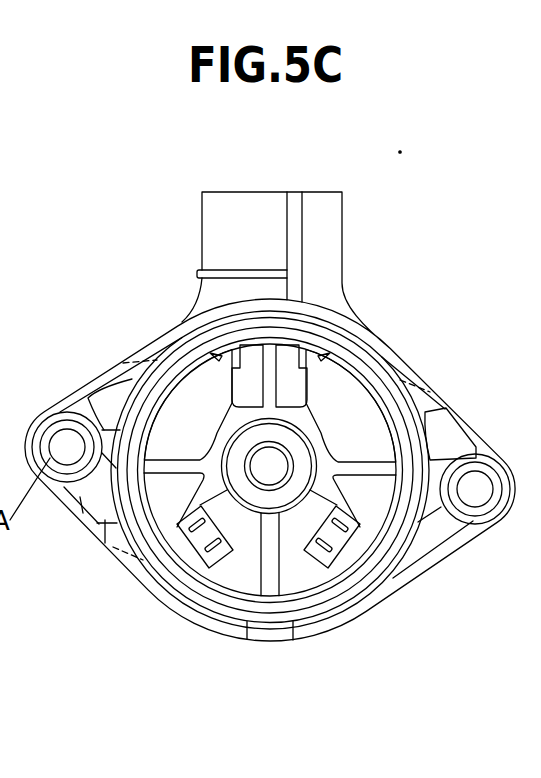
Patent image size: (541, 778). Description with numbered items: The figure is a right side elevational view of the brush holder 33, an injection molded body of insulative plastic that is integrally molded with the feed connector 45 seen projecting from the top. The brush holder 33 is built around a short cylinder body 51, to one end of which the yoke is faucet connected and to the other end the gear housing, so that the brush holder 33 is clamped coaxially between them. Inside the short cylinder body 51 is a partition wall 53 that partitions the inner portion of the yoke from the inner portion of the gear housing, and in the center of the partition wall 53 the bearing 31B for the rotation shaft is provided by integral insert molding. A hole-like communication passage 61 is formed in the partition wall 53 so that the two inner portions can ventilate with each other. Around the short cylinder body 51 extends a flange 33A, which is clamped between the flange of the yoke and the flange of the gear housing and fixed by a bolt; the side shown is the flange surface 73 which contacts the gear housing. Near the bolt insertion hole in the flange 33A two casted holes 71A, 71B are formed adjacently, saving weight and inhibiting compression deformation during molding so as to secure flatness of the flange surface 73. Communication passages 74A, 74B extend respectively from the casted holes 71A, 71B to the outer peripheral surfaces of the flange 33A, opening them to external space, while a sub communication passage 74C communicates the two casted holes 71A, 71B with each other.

The brush holder 33 is at (377, 303).
The feed connector 45 is at (212, 217).
The partition wall 53 is at (367, 420).
The communication passage 61 is at (215, 355).
The flange surface 73 is at (65, 415).
The casted hole 71A is at (97, 387).
The communication passage 74A is at (103, 405).
The flange 33A is at (52, 480).
The communication passage 74B is at (84, 523).
The casted hole 71B is at (109, 527).
The sub communication passage 74C is at (140, 562).
The short cylinder body 51 is at (413, 387).
The bearing 31B is at (420, 503).